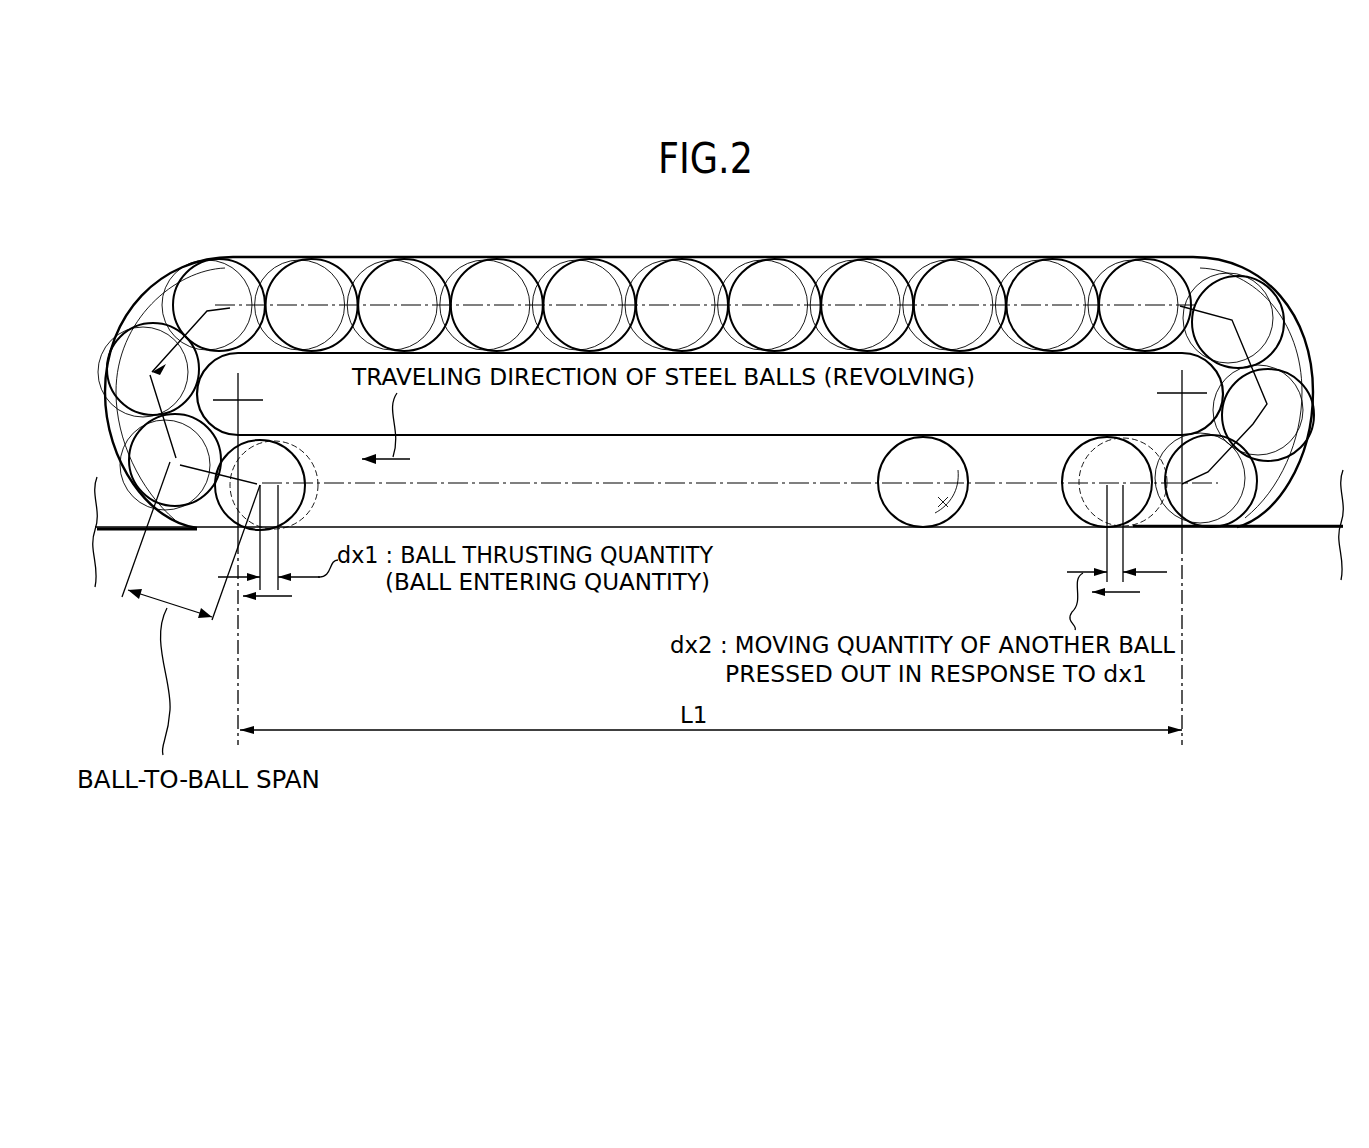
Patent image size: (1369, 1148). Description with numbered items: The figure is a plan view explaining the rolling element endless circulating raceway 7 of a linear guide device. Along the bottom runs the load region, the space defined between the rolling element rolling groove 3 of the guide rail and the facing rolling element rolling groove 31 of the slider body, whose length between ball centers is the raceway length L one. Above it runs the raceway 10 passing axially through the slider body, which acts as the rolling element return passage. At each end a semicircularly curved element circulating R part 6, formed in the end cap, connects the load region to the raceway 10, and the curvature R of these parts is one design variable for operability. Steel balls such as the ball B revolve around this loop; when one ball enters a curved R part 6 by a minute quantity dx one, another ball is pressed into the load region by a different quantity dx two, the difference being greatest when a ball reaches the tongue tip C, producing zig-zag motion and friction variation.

The rolling element rolling groove 3 is at (743, 520).
The element circulating R part 6 is at (143, 313).
The element endless circulating raceway 7 is at (803, 508).
The raceway 10 is at (636, 266).
The rolling element rolling groove 31 is at (826, 443).
The steel ball B is at (952, 517).
The tongue tip C is at (1233, 507).
The element circulating R part R is at (227, 384).